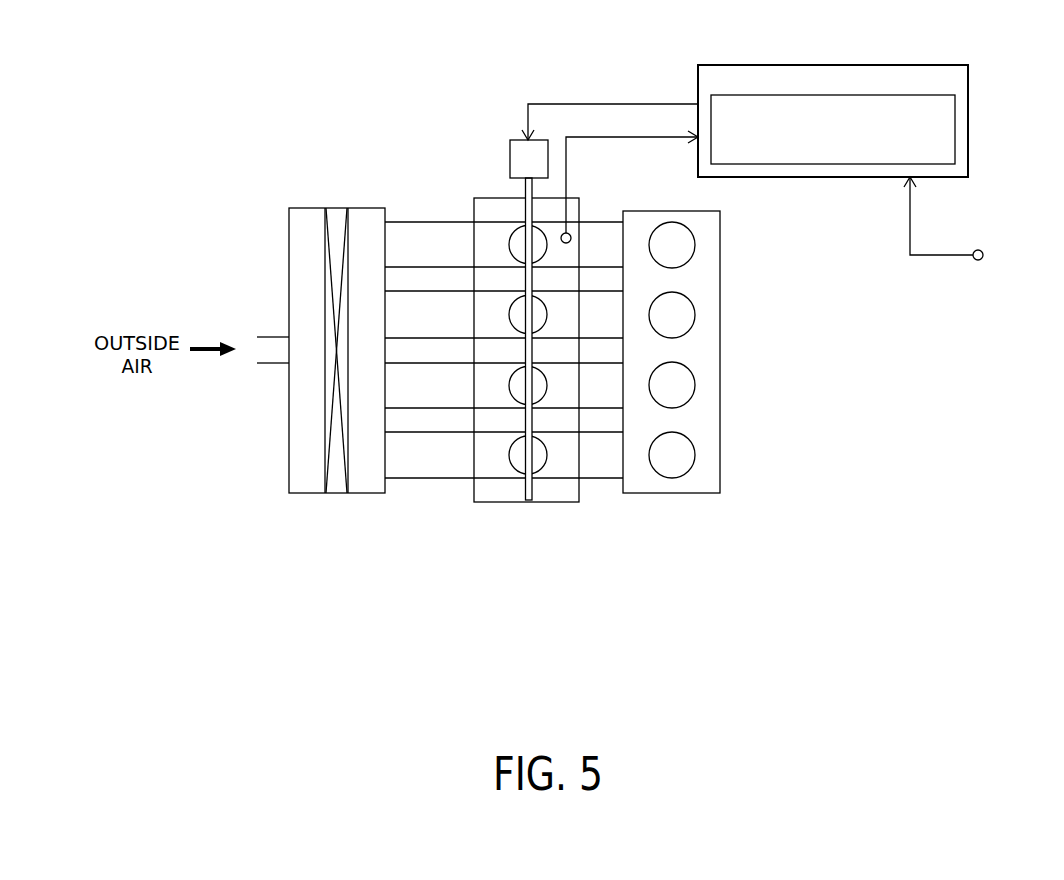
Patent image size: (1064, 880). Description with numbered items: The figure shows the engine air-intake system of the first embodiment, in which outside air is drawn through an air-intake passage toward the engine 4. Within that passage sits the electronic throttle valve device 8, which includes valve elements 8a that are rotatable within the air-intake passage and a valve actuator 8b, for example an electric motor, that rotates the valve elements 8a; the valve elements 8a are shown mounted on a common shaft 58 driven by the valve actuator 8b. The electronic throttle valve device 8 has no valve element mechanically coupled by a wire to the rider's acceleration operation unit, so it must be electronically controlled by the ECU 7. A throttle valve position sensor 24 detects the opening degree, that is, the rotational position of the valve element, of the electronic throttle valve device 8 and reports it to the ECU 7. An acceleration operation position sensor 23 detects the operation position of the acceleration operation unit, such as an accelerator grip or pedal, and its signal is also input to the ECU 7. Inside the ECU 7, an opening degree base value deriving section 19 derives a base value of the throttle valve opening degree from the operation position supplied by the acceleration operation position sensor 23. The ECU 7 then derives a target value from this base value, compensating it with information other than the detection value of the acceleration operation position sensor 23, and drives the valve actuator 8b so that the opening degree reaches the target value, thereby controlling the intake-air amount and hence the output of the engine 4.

The electronic throttle valve device 8 is at (445, 108).
The valve elements 8a is at (510, 235).
The valve actuator 8b is at (528, 140).
The throttle shaft 58 is at (528, 503).
The throttle valve position sensor 24 is at (570, 233).
The engine 4 is at (700, 494).
The ECU 7 is at (745, 65).
The opening degree base value deriving section 19 is at (955, 108).
The acceleration operation position sensor 23 is at (985, 250).